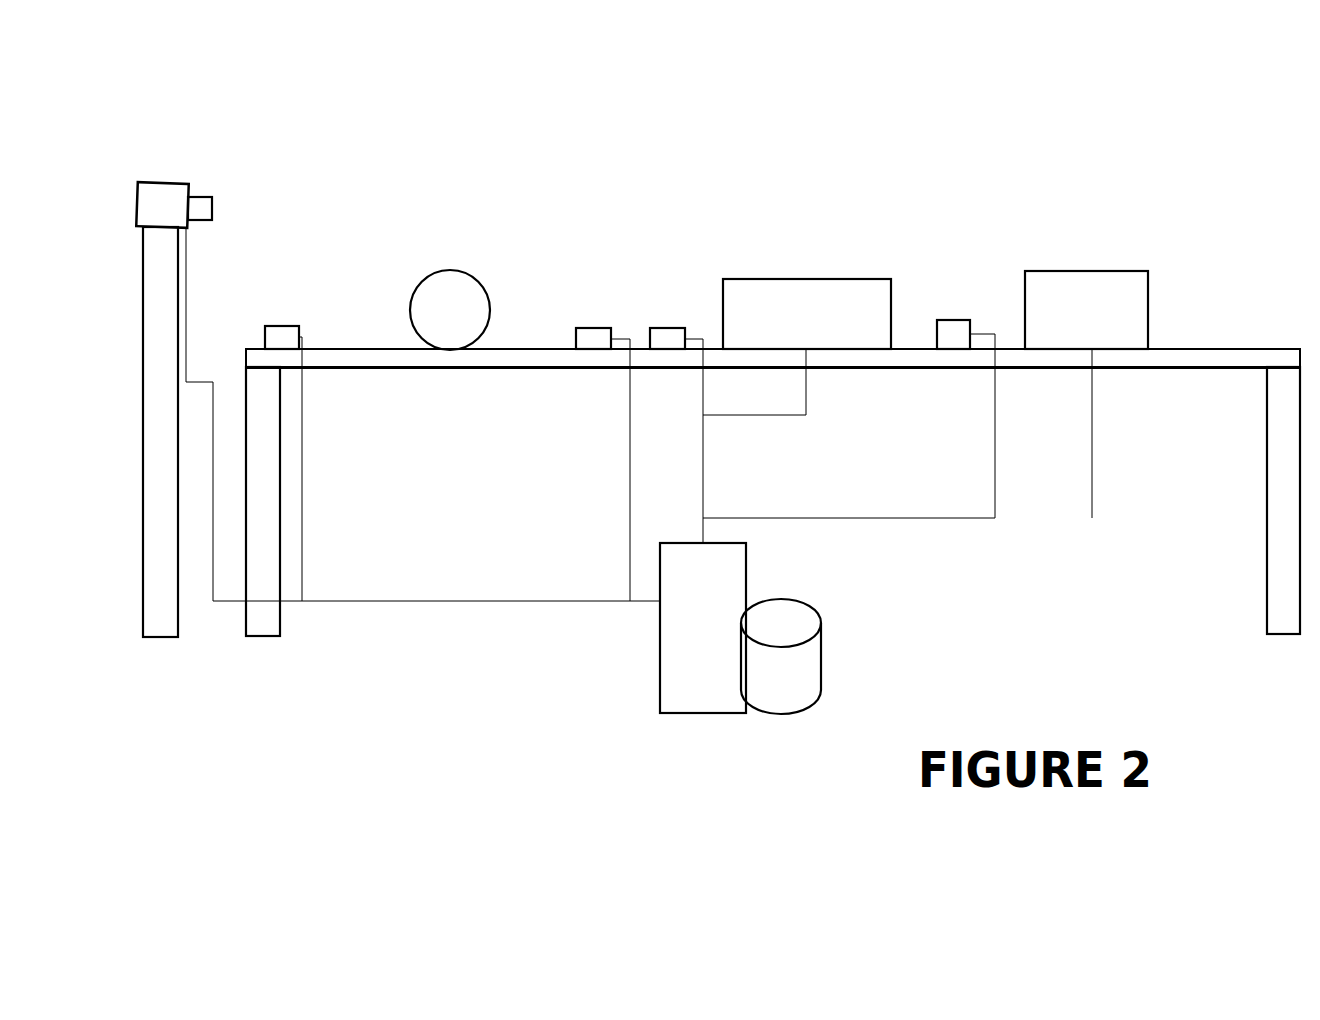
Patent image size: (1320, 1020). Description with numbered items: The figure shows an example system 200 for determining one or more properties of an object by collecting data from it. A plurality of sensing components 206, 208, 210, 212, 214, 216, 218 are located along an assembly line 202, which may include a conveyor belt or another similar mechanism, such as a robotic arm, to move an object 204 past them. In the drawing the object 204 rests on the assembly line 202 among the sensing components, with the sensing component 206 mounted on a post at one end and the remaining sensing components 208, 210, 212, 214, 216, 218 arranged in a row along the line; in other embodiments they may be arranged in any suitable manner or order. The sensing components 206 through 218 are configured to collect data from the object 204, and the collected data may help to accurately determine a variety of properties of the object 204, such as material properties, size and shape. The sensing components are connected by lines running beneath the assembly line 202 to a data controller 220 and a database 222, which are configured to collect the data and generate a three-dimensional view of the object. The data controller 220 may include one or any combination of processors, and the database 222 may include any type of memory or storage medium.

The system 200 is at (256, 100).
The assembly line 202 is at (475, 368).
The object 204 is at (453, 271).
The sensing component 206 is at (162, 183).
The sensing component 208 is at (280, 325).
The sensing component 210 is at (592, 328).
The sensing component 212 is at (666, 328).
The sensing component 214 is at (798, 278).
The sensing component 216 is at (950, 318).
The sensing component 218 is at (1084, 271).
The data controller 220 is at (703, 628).
The database 222 is at (781, 656).